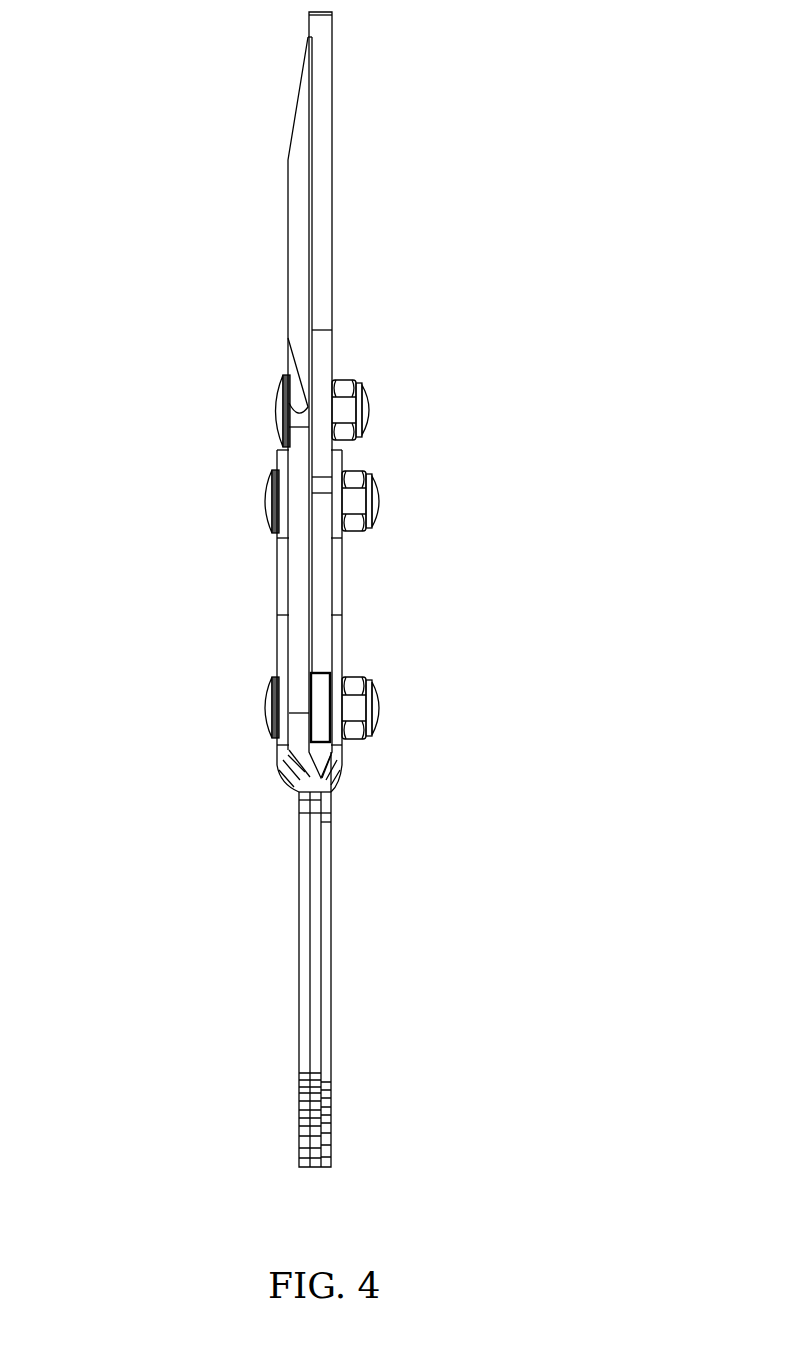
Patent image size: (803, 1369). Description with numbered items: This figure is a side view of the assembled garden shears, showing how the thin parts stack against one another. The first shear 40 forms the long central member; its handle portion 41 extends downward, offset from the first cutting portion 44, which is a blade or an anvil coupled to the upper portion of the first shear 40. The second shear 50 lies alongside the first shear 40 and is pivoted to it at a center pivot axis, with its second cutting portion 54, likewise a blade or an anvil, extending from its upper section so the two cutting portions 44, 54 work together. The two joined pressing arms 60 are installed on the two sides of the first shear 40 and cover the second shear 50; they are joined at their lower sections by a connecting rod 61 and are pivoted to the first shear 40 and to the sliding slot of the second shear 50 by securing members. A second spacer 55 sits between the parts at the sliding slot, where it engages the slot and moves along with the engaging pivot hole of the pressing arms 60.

The first shear 40 is at (345, 133).
The handle portion 41 is at (330, 918).
The first cutting portion 44 is at (327, 228).
The second shear 50 is at (270, 166).
The second cutting portion 54 is at (295, 265).
The second spacer 55 is at (321, 683).
The joined pressing arms 60 is at (282, 815).
The connecting rod 61 is at (305, 912).